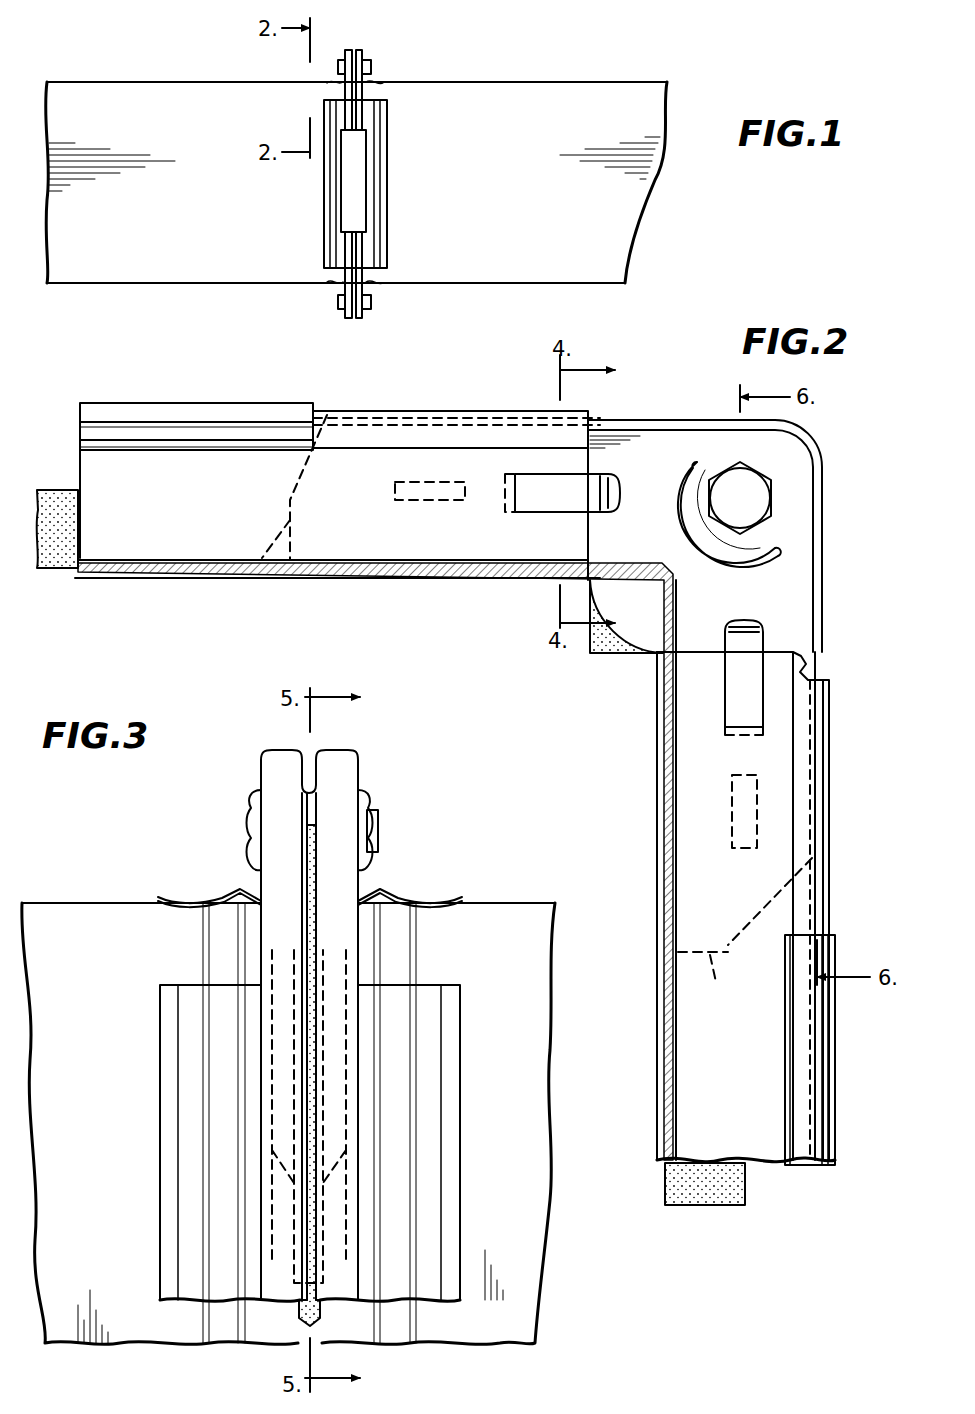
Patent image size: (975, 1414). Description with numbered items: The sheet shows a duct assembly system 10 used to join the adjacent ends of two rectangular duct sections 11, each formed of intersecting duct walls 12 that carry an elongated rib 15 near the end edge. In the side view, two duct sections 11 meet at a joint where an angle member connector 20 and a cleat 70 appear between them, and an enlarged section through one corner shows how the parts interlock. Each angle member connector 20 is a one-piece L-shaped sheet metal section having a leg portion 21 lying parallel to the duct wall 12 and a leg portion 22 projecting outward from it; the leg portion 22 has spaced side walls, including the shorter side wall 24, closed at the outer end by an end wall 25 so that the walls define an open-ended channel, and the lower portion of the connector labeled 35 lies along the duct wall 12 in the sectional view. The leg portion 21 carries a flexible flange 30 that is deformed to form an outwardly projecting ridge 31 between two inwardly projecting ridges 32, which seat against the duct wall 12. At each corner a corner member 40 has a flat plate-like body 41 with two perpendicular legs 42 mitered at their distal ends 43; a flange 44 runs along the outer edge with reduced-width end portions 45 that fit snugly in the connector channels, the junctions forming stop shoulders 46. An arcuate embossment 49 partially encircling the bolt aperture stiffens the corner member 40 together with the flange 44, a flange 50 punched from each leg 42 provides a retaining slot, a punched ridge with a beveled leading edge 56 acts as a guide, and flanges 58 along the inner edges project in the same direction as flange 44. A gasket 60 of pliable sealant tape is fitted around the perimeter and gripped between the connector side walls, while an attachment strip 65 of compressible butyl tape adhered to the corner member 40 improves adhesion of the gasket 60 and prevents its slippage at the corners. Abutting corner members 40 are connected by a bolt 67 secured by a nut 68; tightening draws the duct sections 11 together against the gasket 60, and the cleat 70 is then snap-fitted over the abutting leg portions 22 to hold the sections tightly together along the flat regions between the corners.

In FIG. 1, the duct assembly system 10 is at (405, 62).
In FIG. 1, the duct section 11 is at (130, 80).
In FIG. 1, the duct wall 12 is at (127, 265).
In FIG. 2, the duct wall 12 is at (432, 578).
In FIG. 3, the duct wall 12 is at (42, 908).
In FIG. 3, the rib 15 is at (240, 940).
In FIG. 1, the angle member connector 20 is at (390, 240).
In FIG. 2, the angle member connector 20 is at (445, 408).
In FIG. 3, the angle member connector 20 is at (160, 1200).
In FIG. 3, the leg portion 21 is at (445, 1112).
In FIG. 2, the leg portion 22 is at (828, 750).
In FIG. 2, the side wall 24 is at (115, 470).
In FIG. 3, the end wall 25 is at (335, 750).
In FIG. 3, the flexible flange 30 is at (185, 900).
In FIG. 3, the outwardly projecting ridge 31 is at (240, 890).
In FIG. 3, the inwardly projecting ridge 32 is at (215, 905).
In FIG. 2, the bottom flange 35 is at (192, 580).
In FIG. 1, the corner member 40 is at (352, 320).
In FIG. 2, the corner member 40 is at (828, 470).
In FIG. 2, the body 41 is at (790, 583).
In FIG. 2, the leg 42 is at (262, 575).
In FIG. 2, the mitered distal end 43 is at (800, 882).
In FIG. 2, the flange 44 is at (688, 420).
In FIG. 3, the flange 44 is at (345, 780).
In FIG. 2, the end portion 45 is at (512, 432).
In FIG. 3, the end portion 45 is at (302, 1116).
In FIG. 2, the stop shoulder 46 is at (814, 660).
In FIG. 3, the stop shoulder 46 is at (270, 990).
In FIG. 2, the arcuate embossment 49 is at (780, 545).
In FIG. 2, the flange 50 is at (548, 490).
In FIG. 2, the beveled leading edge 56 is at (430, 490).
In FIG. 2, the flange 58 is at (638, 568).
In FIG. 2, the gasket 60 is at (650, 592).
In FIG. 3, the gasket 60 is at (320, 1320).
In FIG. 3, the attachment strip 65 is at (318, 852).
In FIG. 2, the bolt 67 is at (742, 498).
In FIG. 3, the bolt 67 is at (380, 836).
In FIG. 3, the nut 68 is at (362, 860).
In FIG. 1, the cleat 70 is at (350, 200).
In FIG. 2, the cleat 70 is at (838, 1062).